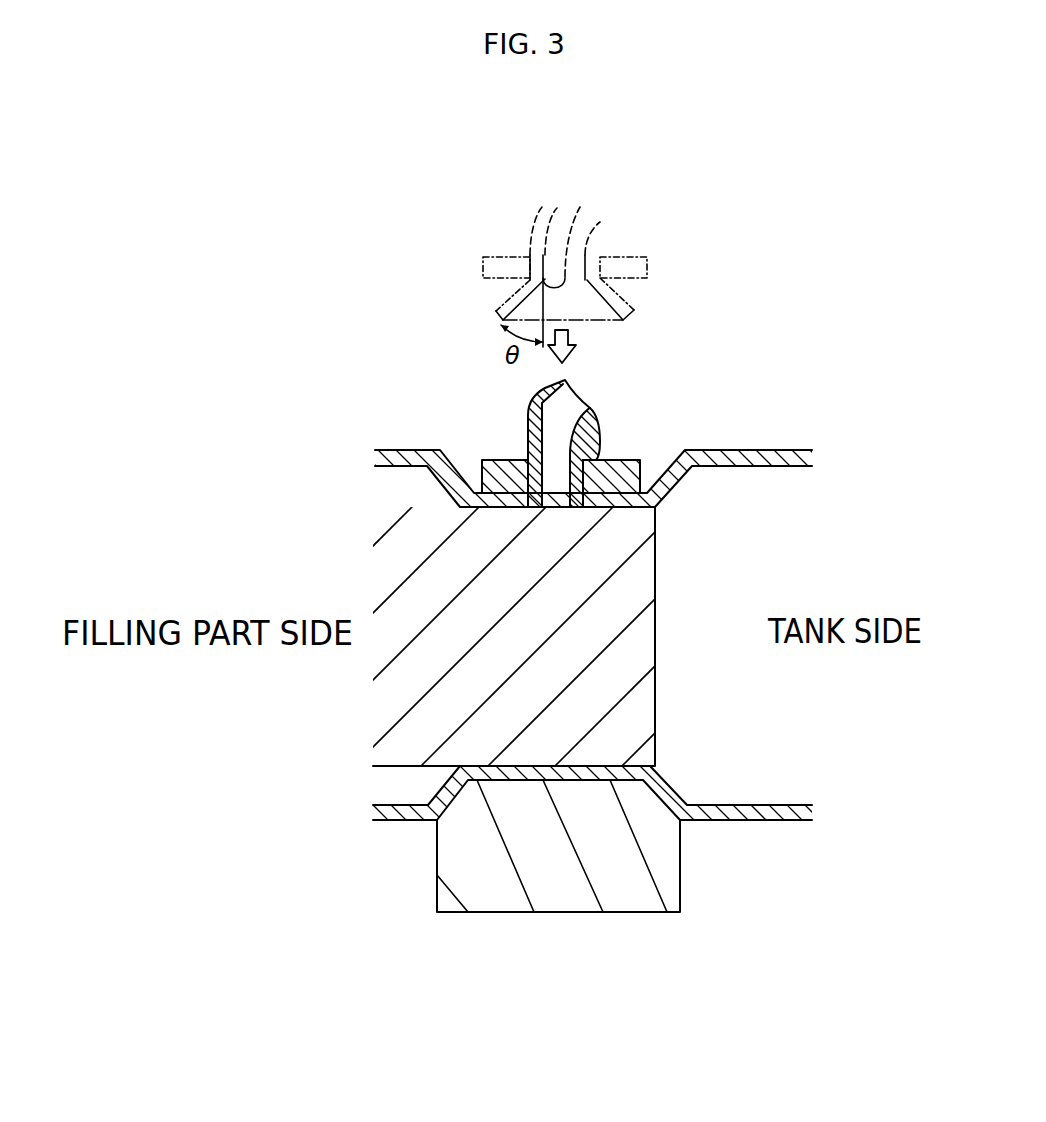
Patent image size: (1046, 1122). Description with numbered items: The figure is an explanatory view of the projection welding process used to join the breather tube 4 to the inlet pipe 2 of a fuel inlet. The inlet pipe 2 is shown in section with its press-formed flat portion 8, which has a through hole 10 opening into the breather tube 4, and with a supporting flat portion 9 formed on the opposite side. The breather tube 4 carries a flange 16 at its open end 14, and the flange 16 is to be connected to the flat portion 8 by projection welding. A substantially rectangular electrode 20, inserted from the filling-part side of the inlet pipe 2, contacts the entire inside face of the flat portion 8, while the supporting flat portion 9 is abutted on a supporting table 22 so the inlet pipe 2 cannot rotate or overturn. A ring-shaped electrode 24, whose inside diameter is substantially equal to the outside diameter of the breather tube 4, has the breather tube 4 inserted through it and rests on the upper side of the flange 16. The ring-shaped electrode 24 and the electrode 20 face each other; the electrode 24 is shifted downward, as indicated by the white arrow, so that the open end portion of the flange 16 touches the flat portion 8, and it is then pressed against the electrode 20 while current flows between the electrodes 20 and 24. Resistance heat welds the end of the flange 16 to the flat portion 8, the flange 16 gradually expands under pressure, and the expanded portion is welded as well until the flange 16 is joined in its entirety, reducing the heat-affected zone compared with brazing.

The inlet pipe 2 is at (731, 450).
The breather tube 4 is at (545, 402).
The flat portion 8 is at (612, 495).
The supporting flat portion 9 is at (506, 783).
The through hole 10 is at (583, 420).
The open end 14 is at (545, 488).
The flange 16 is at (478, 490).
The electrode 20 is at (428, 720).
The supporting table 22 is at (631, 896).
The ring-shaped electrode 24 is at (520, 475).